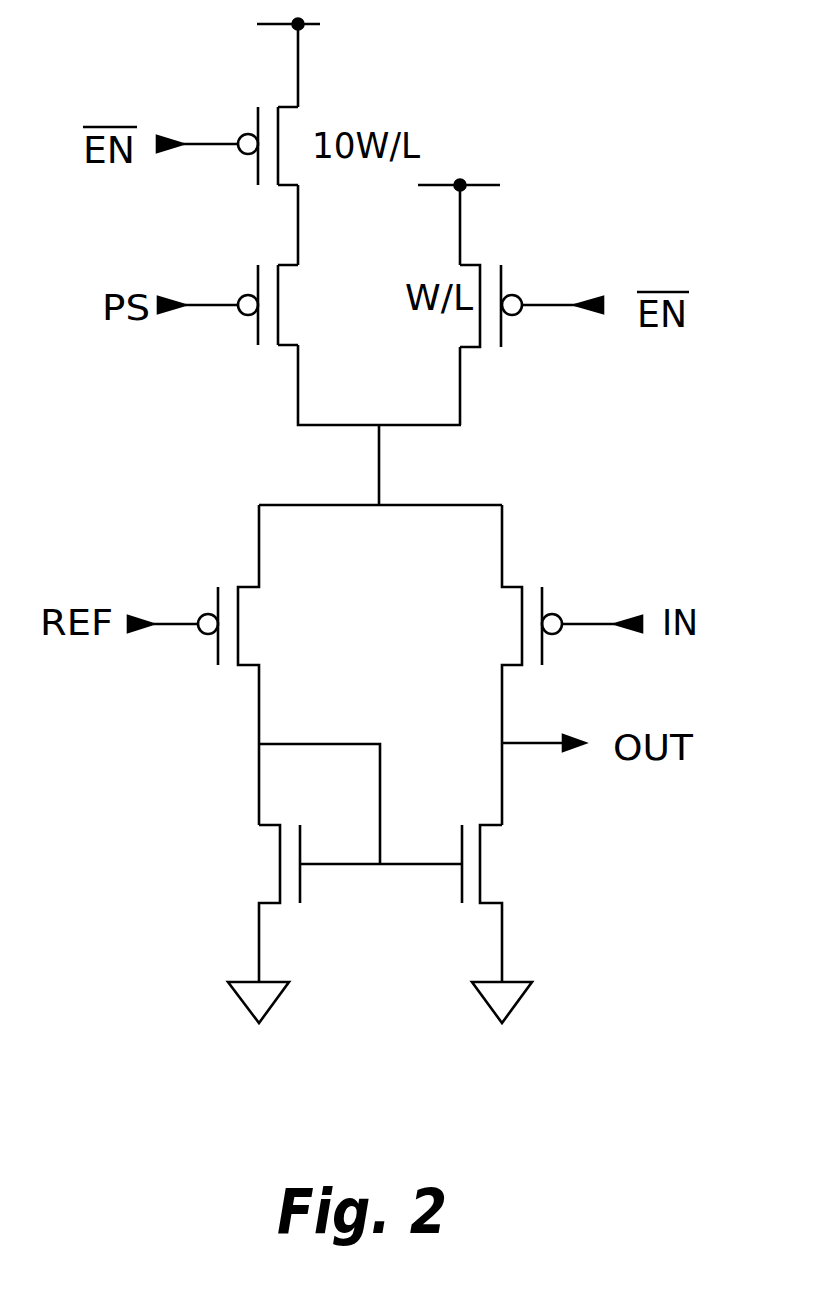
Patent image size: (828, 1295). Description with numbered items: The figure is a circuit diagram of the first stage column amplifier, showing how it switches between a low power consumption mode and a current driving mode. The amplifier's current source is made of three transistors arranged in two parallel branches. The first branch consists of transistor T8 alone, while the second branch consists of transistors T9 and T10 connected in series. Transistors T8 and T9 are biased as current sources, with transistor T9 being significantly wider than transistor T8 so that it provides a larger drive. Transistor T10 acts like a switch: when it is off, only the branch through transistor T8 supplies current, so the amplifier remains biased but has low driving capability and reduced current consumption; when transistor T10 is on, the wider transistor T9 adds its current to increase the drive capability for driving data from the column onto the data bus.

The transistor T8 is at (531, 323).
The transistor T9 is at (227, 130).
The transistor T10 is at (228, 291).